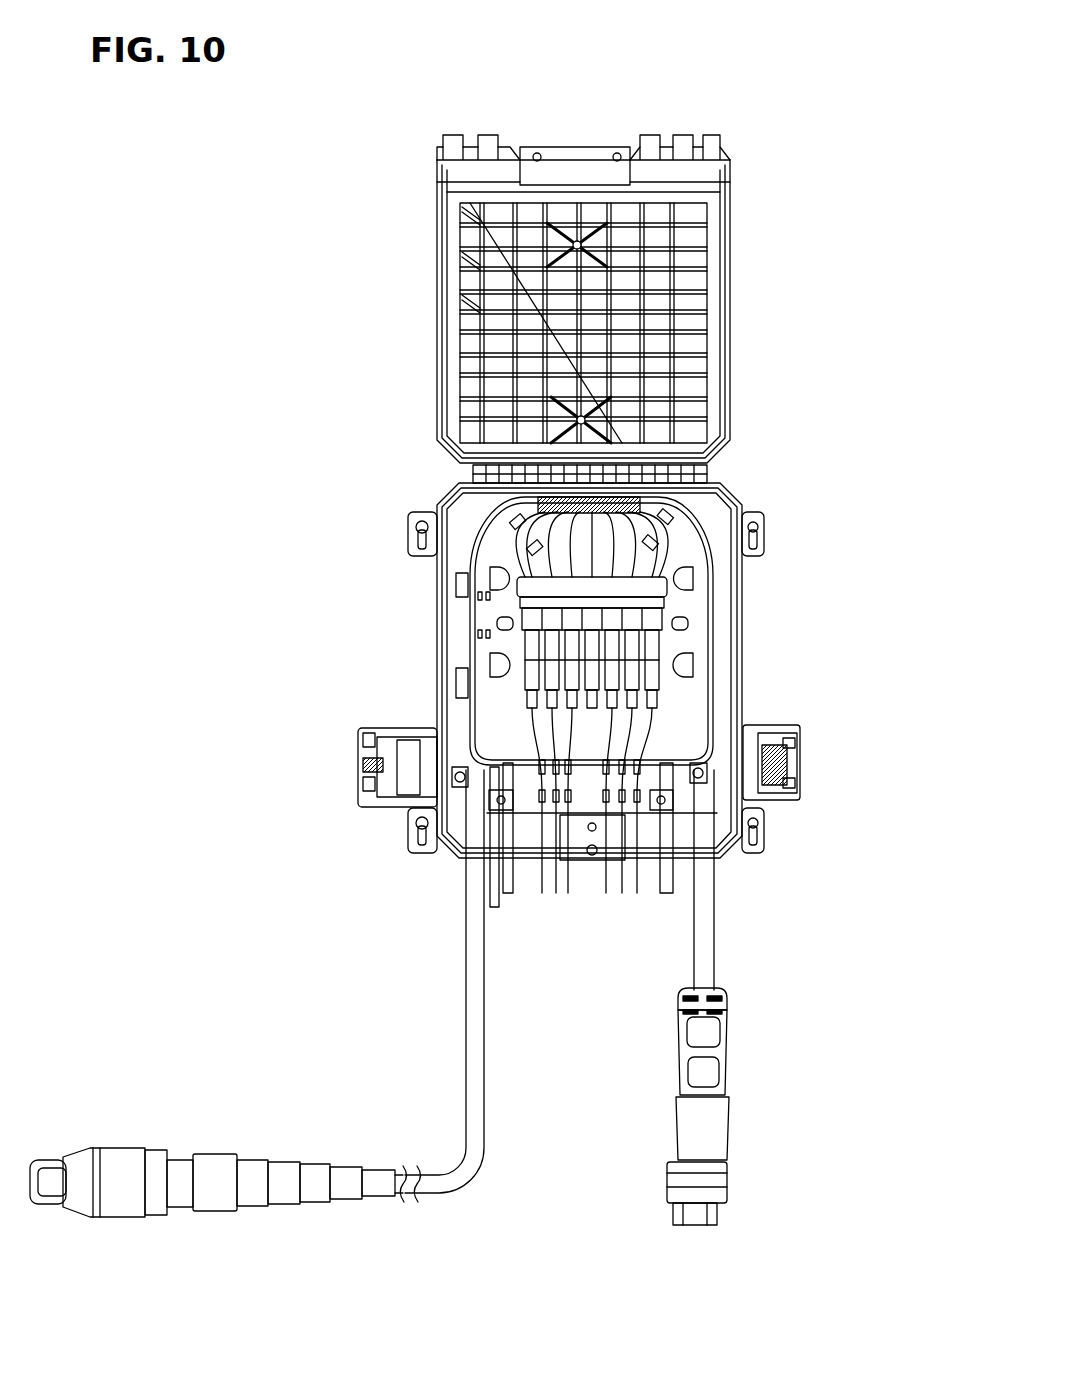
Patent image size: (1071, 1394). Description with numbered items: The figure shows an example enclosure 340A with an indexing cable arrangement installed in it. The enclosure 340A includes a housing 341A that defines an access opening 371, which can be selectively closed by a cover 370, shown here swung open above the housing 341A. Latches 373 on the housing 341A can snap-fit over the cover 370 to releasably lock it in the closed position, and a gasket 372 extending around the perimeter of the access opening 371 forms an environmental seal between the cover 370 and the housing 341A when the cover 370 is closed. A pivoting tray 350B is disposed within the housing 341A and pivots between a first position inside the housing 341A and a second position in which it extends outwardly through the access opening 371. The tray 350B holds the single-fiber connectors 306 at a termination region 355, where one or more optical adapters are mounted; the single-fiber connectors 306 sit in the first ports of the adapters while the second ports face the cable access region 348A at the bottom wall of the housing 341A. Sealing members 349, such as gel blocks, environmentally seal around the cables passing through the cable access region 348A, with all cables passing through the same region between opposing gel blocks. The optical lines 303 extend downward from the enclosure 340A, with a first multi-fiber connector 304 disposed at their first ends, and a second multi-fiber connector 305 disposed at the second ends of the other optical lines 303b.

The enclosure 340A is at (567, 613).
The cover 370 is at (737, 292).
The sealing members 349 is at (597, 152).
The gasket 372 is at (437, 497).
The access opening 371 is at (735, 498).
The housing 341A is at (722, 582).
The pivoting tray 350B is at (700, 690).
The termination region 355 is at (655, 608).
The single-fiber connectors 306 is at (525, 632).
The latches 373 is at (358, 757).
The cable access region 348A is at (492, 903).
The optical lines 303 is at (453, 1157).
The first multi-fiber connector 304 is at (125, 1163).
The others of the optical lines 303b is at (707, 943).
The second multi-fiber connector 305 is at (712, 1108).